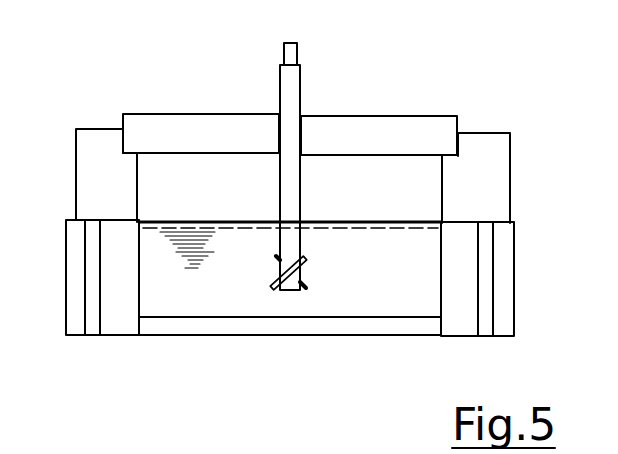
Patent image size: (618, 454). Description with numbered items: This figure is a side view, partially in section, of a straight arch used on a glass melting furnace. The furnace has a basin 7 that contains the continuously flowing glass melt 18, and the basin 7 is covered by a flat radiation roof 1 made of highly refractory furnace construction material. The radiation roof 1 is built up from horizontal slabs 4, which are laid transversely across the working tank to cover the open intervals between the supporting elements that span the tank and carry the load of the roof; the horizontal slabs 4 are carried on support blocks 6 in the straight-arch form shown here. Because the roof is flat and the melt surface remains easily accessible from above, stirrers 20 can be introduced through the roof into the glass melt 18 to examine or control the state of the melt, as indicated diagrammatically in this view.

The radiation roof 1 is at (202, 134).
The horizontal slabs 4 is at (373, 137).
The support blocks 6 is at (93, 177).
The basin 7 is at (405, 283).
The glass melt 18 is at (237, 299).
The stirrers 20 is at (289, 214).